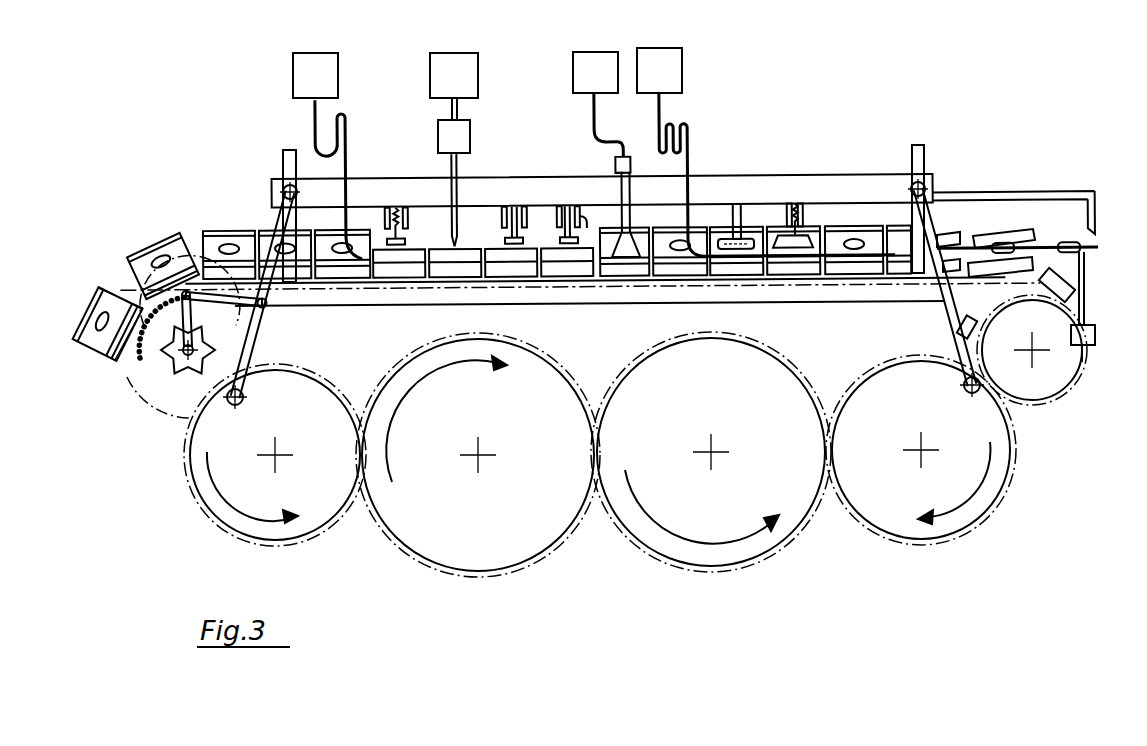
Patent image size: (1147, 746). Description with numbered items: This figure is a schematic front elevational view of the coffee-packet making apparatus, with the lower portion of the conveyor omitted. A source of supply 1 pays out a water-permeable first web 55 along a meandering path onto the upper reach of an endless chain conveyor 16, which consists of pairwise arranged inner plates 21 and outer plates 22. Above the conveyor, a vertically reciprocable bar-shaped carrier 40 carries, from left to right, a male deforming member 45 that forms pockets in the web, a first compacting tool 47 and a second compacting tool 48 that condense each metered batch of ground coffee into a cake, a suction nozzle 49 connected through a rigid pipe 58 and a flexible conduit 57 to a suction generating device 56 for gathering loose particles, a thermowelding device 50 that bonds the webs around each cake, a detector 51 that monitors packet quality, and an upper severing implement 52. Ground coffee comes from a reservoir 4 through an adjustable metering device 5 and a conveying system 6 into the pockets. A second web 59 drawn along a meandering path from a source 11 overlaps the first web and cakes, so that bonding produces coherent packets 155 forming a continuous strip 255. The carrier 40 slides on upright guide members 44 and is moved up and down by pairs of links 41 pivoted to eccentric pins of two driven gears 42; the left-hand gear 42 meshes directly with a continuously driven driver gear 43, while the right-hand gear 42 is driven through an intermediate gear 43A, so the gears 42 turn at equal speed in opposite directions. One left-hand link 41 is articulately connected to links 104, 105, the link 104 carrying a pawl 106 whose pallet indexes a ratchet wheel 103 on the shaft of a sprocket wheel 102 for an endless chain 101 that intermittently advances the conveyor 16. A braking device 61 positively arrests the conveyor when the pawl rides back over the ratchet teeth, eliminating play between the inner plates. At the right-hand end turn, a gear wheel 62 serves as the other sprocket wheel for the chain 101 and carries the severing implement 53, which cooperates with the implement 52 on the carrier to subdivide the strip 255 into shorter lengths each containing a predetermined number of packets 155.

The source of supply 1 is at (297, 70).
The reservoir 4 is at (465, 70).
The metering device 5 is at (462, 137).
The conveying system 6 is at (460, 172).
The source 11 is at (670, 62).
The endless chain conveyor 16 is at (120, 287).
The inner plates 21 is at (118, 352).
The outer plates 22 is at (92, 340).
The carrier 40 is at (363, 188).
The links 41 is at (258, 335).
The driven gear 42 is at (250, 497).
The driver gear 43 is at (423, 538).
The intermediate gear 43A is at (668, 543).
The upright guide members 44 is at (285, 160).
The male deforming member 45 is at (404, 240).
The first compacting tool 47 is at (525, 240).
The second compacting tool 48 is at (576, 240).
The nozzle 49 is at (622, 260).
The thermowelding device 50 is at (757, 242).
The detector 51 is at (803, 234).
The upper severing implement 52 is at (1088, 228).
The severing implement 53 is at (1087, 358).
The first web 55 is at (340, 112).
The suction generating device 56 is at (592, 62).
The flexible conduit 57 is at (594, 116).
The rigid pipe 58 is at (633, 195).
The second web 59 is at (670, 122).
The braking device 61 is at (990, 248).
The gear wheel 62 is at (1016, 336).
The endless chain 101 is at (380, 302).
The sprocket wheel 102 is at (168, 378).
The ratchet wheel 103 is at (205, 365).
The link 104 is at (165, 262).
The link 105 is at (241, 297).
The pawl 106 is at (212, 292).
The packets 155 is at (973, 322).
The continuous strip 255 is at (901, 238).